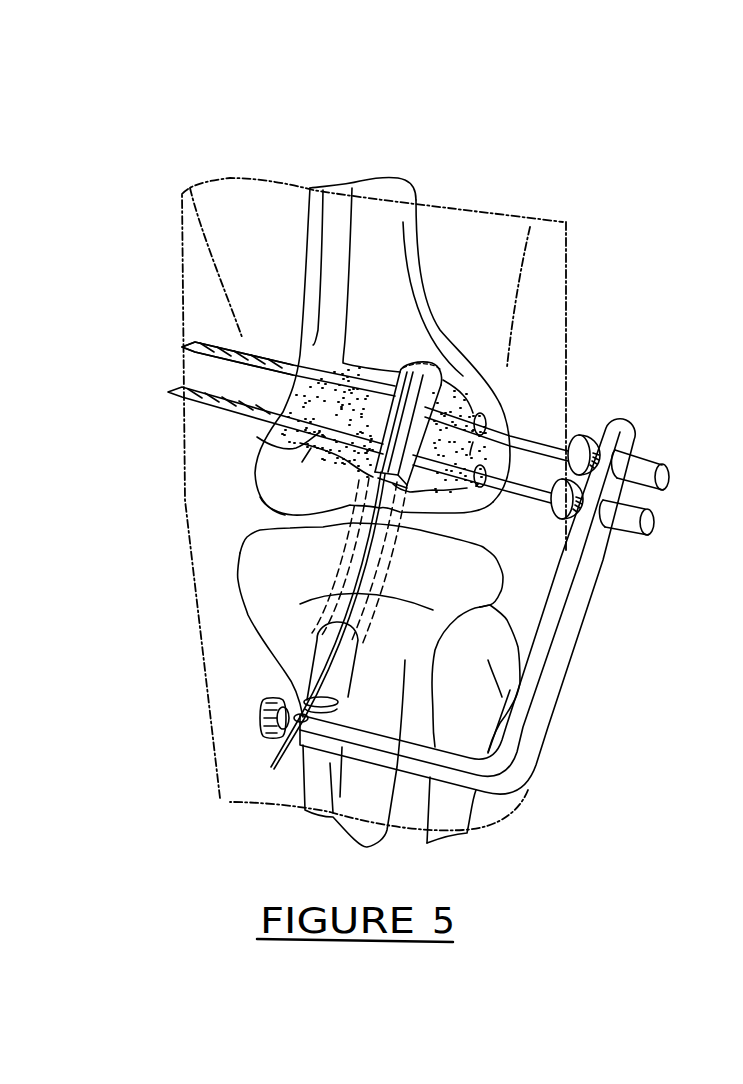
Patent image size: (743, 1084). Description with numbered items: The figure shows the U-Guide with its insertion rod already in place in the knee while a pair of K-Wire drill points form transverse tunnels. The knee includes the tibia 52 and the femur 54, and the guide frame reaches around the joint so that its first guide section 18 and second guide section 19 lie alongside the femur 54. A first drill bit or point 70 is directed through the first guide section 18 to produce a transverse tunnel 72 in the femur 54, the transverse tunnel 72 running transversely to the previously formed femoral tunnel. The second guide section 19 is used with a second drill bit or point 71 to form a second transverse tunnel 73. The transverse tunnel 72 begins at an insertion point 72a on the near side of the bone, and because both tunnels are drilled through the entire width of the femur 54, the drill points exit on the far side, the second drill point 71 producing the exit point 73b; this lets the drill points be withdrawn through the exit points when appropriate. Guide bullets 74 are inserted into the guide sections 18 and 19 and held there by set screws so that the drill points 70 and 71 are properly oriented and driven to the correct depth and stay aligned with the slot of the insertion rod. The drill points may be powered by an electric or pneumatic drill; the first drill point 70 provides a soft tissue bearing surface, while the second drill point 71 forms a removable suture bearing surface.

The first guide section 18 is at (603, 527).
The second guide section 19 is at (627, 443).
The tibia 52 is at (283, 565).
The femur 54 is at (443, 342).
The first drill bit or point 70 is at (507, 480).
The second drill bit or point 71 is at (527, 430).
The transverse tunnel 72 is at (292, 436).
The insertion point 72a is at (280, 421).
The second transverse tunnel 73 is at (352, 371).
The exit point 73b is at (292, 347).
The guide bullet 74 is at (627, 512).